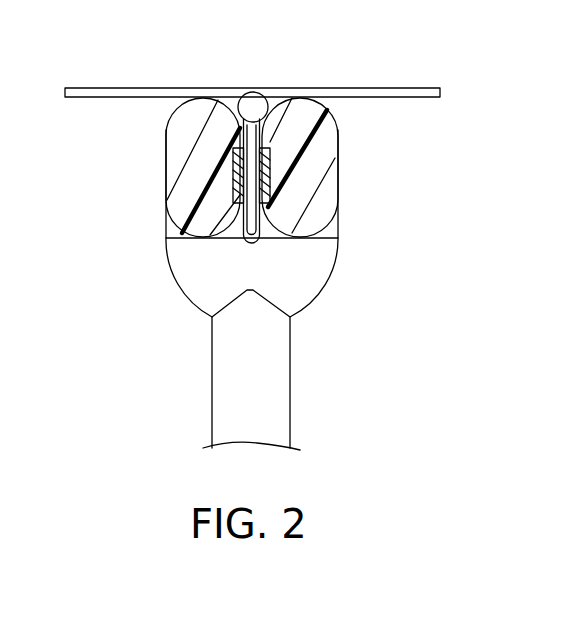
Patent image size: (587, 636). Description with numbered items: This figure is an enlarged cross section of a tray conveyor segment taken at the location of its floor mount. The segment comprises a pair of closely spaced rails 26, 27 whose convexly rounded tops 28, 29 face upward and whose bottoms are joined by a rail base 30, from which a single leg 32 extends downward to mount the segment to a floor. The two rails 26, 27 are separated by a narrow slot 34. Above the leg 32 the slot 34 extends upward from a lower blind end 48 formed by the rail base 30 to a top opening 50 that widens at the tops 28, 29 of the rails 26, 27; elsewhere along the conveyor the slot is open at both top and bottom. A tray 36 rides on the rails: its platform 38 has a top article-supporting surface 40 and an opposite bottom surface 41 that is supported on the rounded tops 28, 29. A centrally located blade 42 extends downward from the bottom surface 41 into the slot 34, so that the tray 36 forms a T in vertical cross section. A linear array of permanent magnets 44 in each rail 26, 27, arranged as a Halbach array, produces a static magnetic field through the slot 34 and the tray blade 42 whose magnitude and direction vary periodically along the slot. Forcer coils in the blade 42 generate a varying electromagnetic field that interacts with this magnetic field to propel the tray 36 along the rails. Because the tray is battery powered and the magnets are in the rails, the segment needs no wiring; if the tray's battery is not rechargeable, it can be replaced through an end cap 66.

The rail 26 is at (339, 142).
The rail 27 is at (165, 145).
The convexly rounded top 28 is at (295, 98).
The convexly rounded top 29 is at (200, 98).
The rail base 30 is at (312, 272).
The leg 32 is at (278, 402).
The slot 34 is at (245, 245).
The tray 36 is at (97, 90).
The platform 38 is at (443, 91).
The top article-supporting surface 40 is at (308, 97).
The bottom surface 41 is at (392, 98).
The blade 42 is at (258, 240).
The permanent magnets 44 is at (235, 182).
The lower blind end 48 is at (257, 242).
The top opening 50 is at (278, 100).
The end cap 66 is at (252, 92).